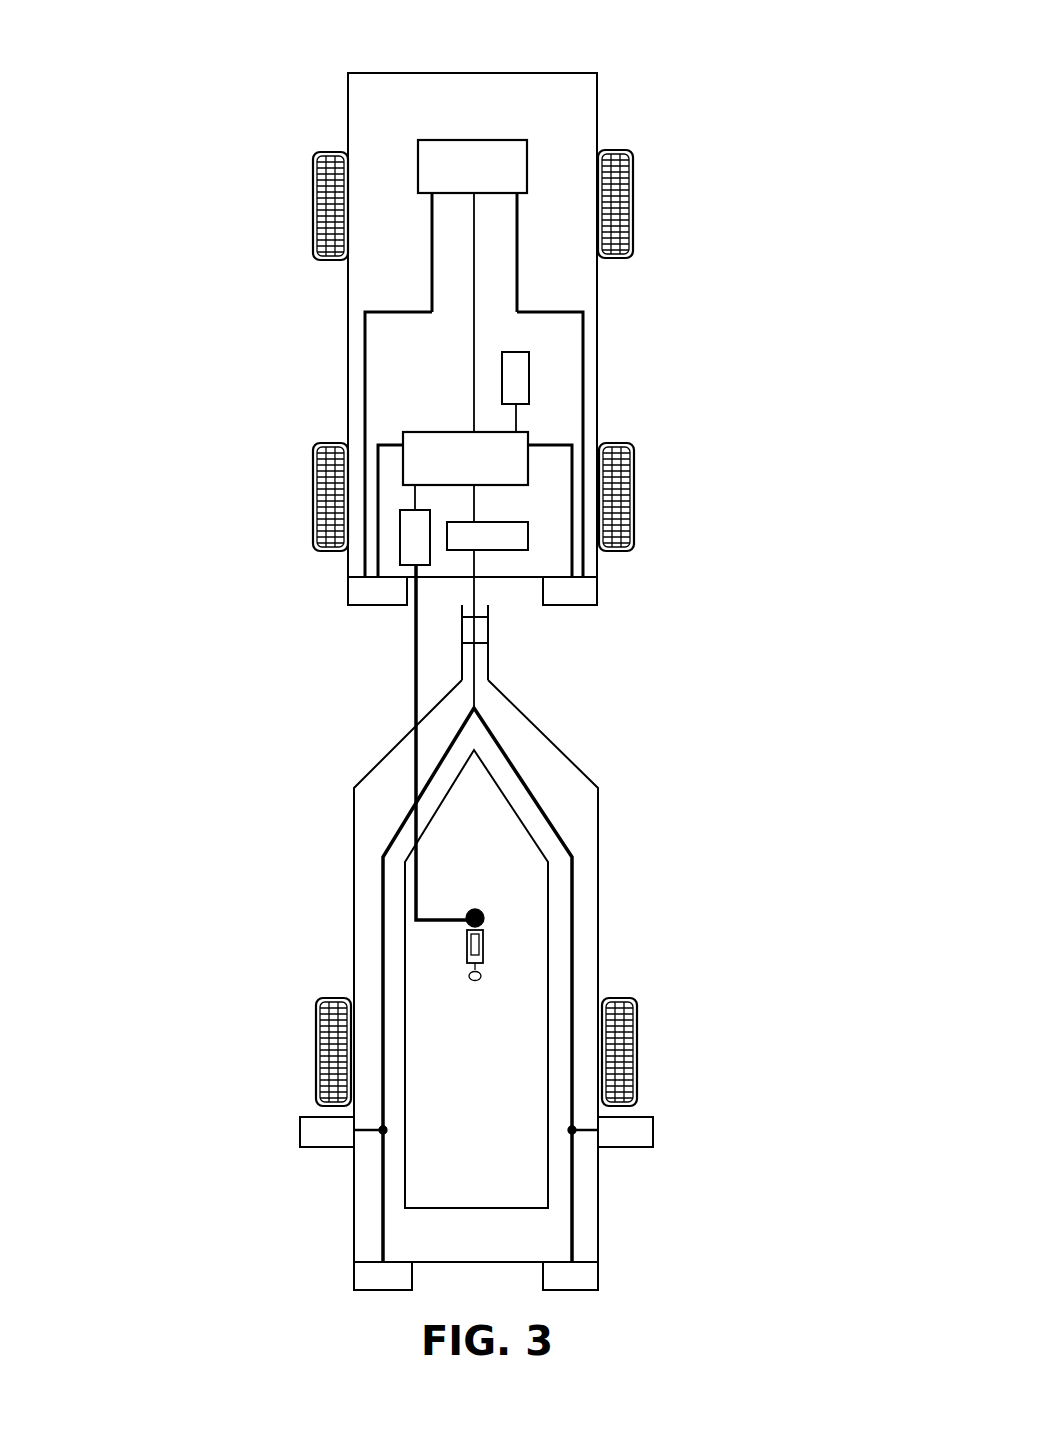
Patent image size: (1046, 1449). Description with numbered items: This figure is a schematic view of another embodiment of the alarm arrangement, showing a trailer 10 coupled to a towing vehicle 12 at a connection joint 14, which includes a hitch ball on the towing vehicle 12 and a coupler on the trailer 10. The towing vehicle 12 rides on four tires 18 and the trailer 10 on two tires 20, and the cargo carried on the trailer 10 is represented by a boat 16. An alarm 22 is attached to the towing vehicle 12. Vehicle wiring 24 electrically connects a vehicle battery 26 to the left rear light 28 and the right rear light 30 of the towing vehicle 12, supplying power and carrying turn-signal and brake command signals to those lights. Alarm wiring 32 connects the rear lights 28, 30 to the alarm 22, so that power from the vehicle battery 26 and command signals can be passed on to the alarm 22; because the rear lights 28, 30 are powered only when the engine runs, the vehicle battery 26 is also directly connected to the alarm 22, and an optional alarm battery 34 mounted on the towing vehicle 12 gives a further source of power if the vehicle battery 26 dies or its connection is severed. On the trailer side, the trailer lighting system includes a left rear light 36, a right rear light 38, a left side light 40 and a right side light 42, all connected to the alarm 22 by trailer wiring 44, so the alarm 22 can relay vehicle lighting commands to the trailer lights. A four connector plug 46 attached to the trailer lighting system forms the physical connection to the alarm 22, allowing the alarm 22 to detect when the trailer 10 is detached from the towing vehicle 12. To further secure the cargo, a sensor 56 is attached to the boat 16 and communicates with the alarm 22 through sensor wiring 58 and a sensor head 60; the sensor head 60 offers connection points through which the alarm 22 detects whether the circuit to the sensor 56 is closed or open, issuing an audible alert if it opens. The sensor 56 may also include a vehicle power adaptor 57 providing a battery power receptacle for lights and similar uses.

The trailer 10 is at (594, 773).
The towing vehicle 12 is at (573, 80).
The connection joint 14 is at (487, 630).
The boat 16 is at (538, 858).
The tires 18 is at (312, 222).
The tires 20 is at (318, 1055).
The alarm 22 is at (520, 430).
The vehicle wiring 24 is at (368, 310).
The vehicle battery 26 is at (443, 165).
The left rear light 28 is at (358, 596).
The right rear light 30 is at (592, 585).
The alarm wiring 32 is at (378, 450).
The alarm battery 34 is at (517, 370).
The left rear light 36 is at (367, 1280).
The right rear light 38 is at (590, 1275).
The left side light 40 is at (320, 1135).
The right side light 42 is at (648, 1132).
The trailer wiring 44 is at (382, 877).
The four connector plug 46 is at (495, 550).
The sensor 56 is at (485, 912).
The vehicle power adaptor 57 is at (478, 948).
The sensor wiring 58 is at (416, 672).
The sensor head 60 is at (410, 533).